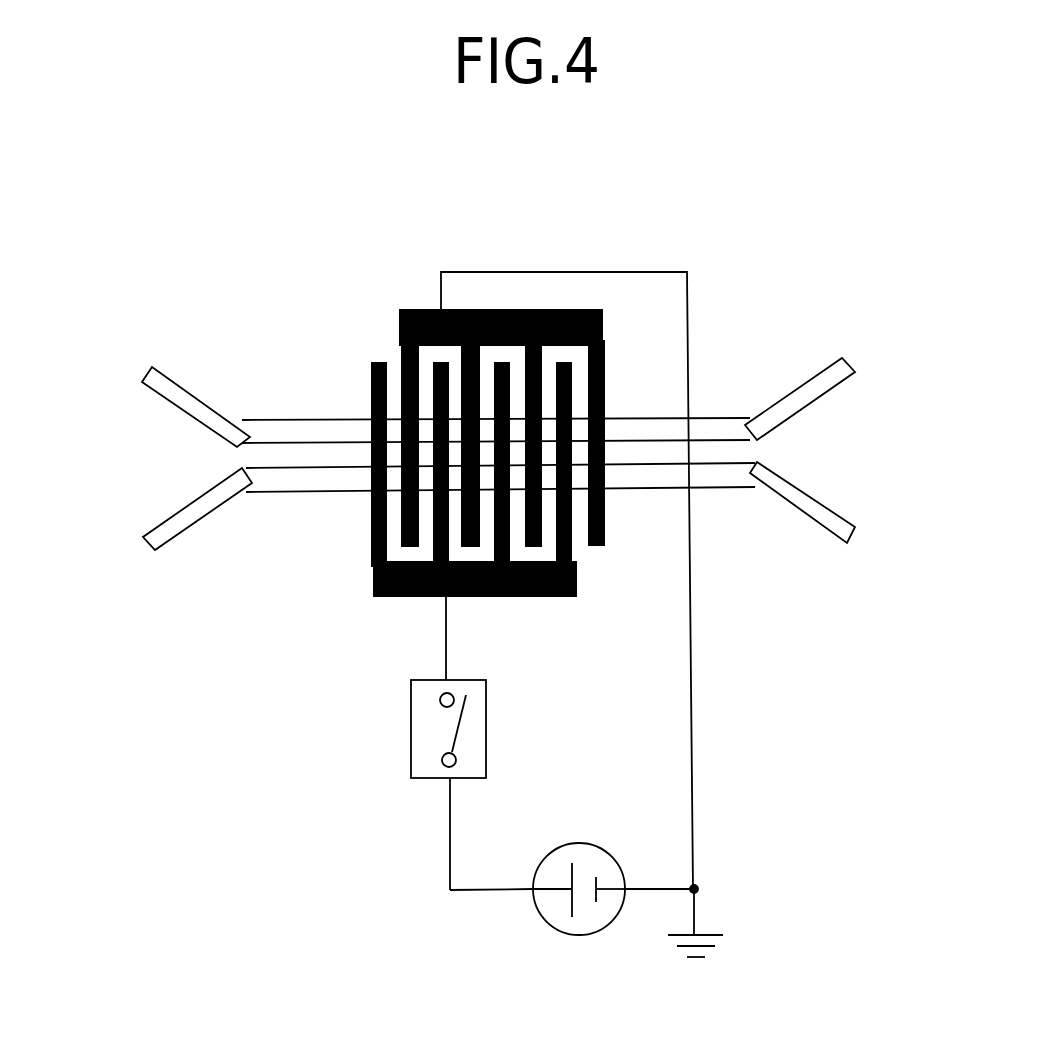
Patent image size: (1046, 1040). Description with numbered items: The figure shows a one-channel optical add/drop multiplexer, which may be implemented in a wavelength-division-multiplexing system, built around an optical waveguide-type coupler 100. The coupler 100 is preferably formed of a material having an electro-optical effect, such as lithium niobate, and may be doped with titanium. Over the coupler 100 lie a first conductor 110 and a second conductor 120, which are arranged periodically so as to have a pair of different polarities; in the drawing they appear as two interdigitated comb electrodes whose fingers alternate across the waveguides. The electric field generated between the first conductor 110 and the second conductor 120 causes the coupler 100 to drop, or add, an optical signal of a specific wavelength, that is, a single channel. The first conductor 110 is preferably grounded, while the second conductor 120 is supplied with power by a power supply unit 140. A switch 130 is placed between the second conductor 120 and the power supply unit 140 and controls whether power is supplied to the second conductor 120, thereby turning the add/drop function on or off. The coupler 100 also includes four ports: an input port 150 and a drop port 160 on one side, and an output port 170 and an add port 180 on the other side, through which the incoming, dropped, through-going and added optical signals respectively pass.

The optical waveguide-type coupler 100 is at (325, 433).
The first conductor 110 is at (418, 308).
The second conductor 120 is at (550, 597).
The switch 130 is at (411, 729).
The power supply unit 140 is at (580, 935).
The input port 150 is at (202, 407).
The drop port 160 is at (203, 512).
The output port 170 is at (788, 392).
The add port 180 is at (790, 507).